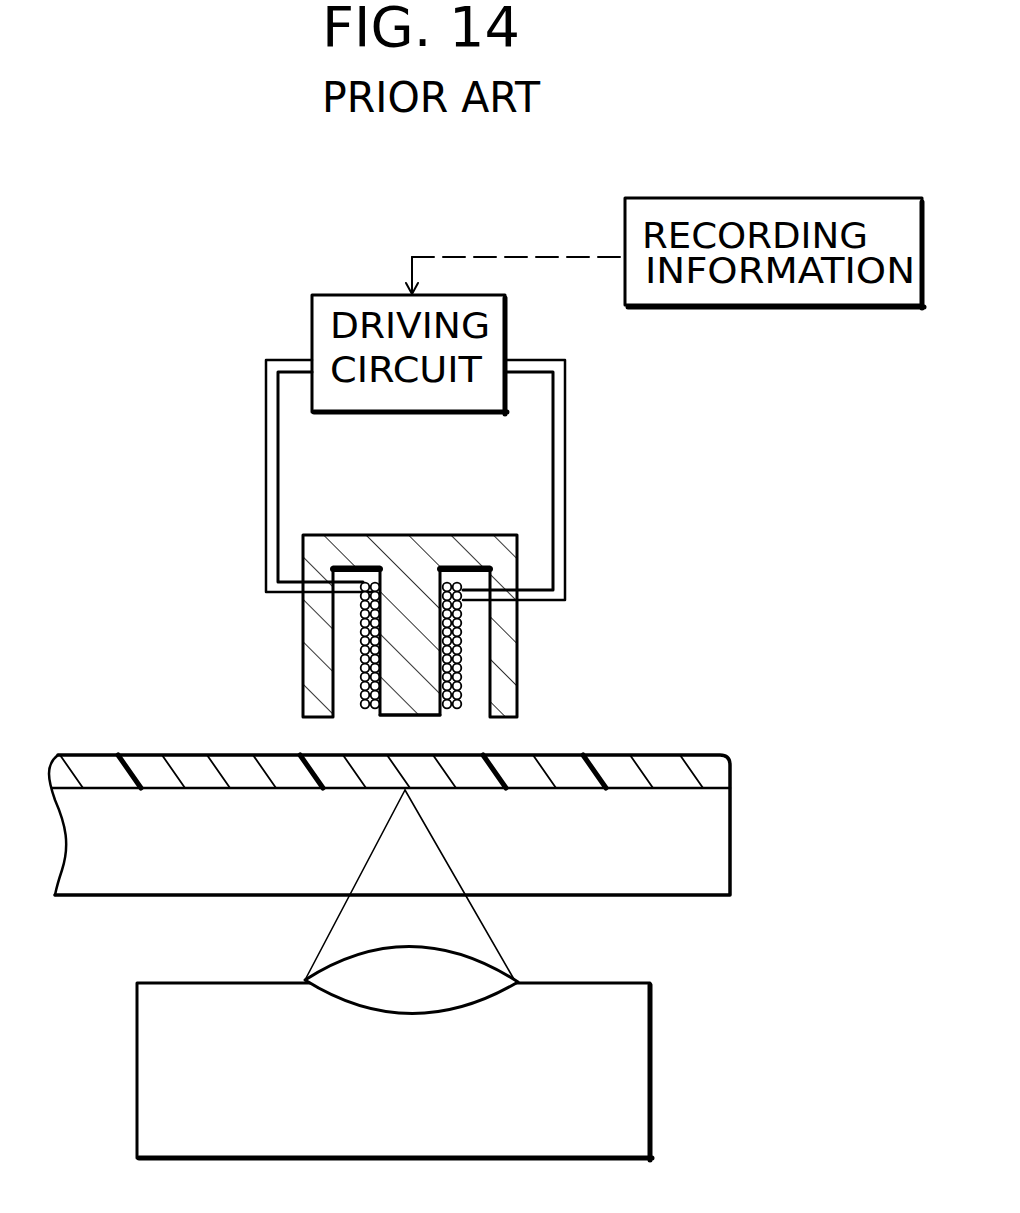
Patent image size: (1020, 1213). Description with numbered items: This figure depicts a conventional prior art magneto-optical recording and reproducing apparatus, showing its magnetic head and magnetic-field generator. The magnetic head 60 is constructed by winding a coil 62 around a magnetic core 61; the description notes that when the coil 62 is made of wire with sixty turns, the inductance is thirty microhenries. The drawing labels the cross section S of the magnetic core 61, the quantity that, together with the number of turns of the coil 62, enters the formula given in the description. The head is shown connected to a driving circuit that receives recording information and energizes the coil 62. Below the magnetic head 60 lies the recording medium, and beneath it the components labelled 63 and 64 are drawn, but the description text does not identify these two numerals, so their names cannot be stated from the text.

The magnetic head 60 is at (358, 537).
The magnetic core 61 is at (400, 647).
The coil 62 is at (463, 637).
The cross section of the magnetic core S is at (417, 708).
The objective lens holder / optical head 63 is at (651, 1025).
The objective lens 64 is at (480, 977).